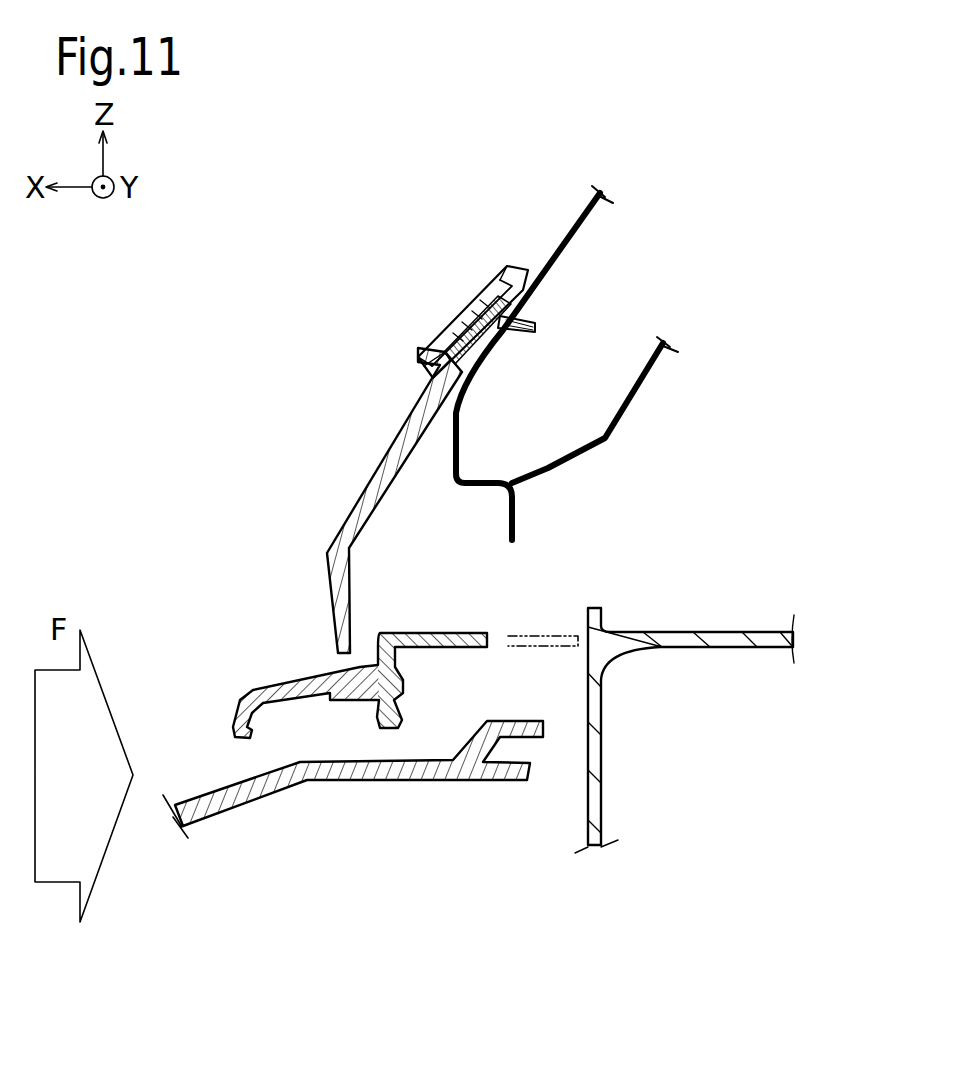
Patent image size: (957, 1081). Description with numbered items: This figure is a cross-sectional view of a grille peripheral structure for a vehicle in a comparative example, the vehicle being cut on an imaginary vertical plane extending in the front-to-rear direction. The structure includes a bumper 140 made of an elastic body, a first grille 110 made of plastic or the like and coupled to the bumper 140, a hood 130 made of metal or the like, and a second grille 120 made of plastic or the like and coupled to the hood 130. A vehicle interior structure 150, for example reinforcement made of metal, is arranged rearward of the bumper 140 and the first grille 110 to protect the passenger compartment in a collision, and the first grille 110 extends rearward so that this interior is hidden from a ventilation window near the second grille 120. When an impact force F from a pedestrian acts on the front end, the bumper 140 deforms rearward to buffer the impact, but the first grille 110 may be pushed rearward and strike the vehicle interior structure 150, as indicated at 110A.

The first grille 110 is at (282, 678).
The rearward-moved position of the first grille 110A is at (543, 632).
The second grille 120 is at (382, 463).
The hood 130 is at (563, 238).
The bumper 140 is at (258, 790).
The vehicle interior structure 150 is at (719, 637).